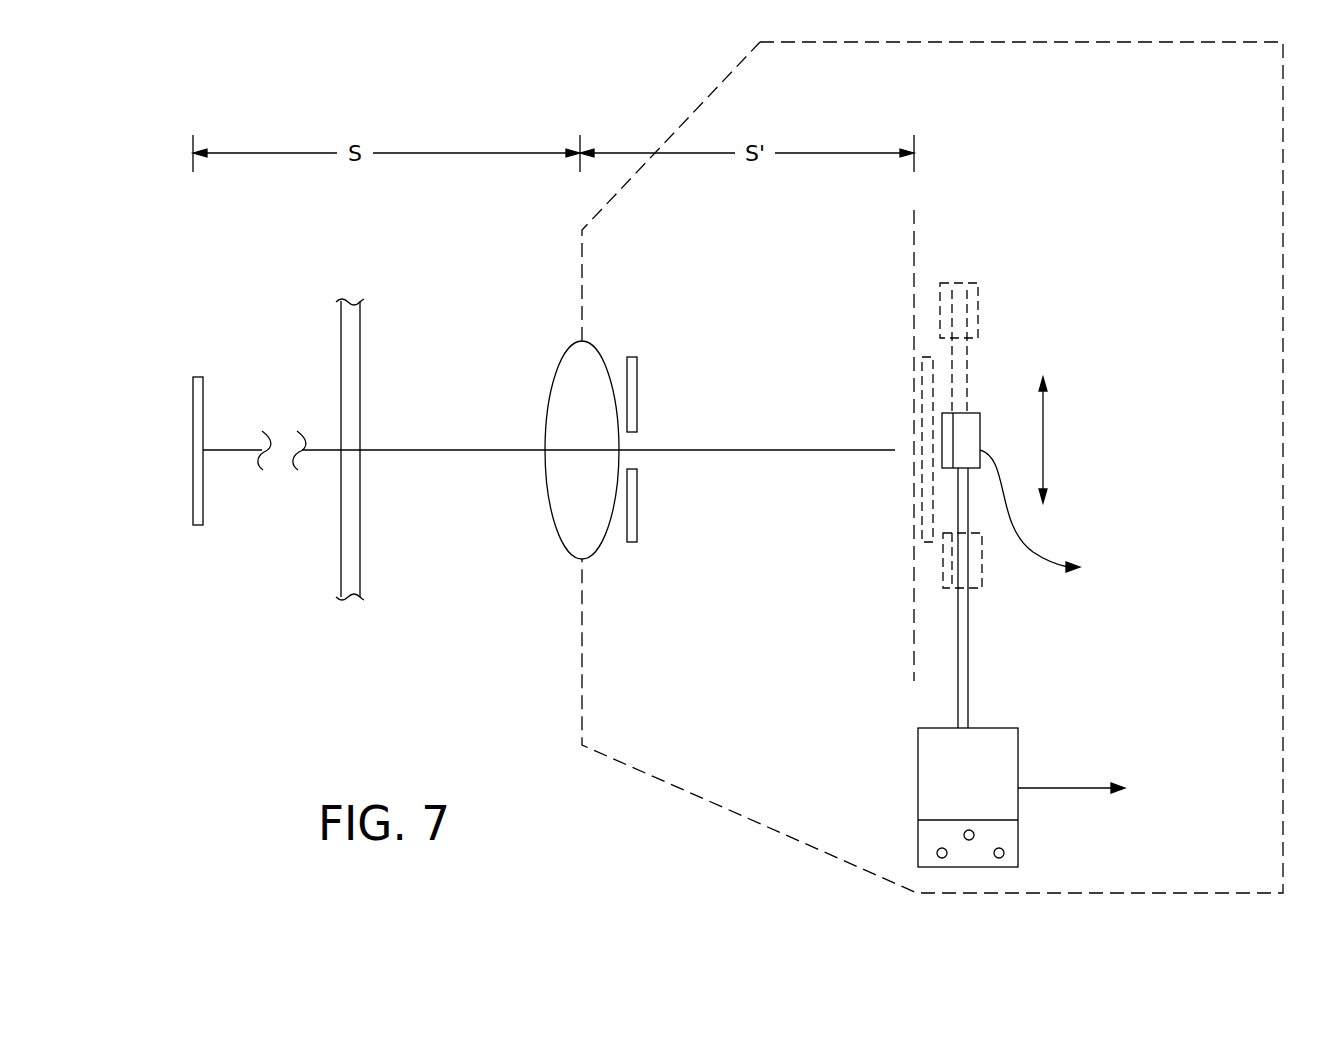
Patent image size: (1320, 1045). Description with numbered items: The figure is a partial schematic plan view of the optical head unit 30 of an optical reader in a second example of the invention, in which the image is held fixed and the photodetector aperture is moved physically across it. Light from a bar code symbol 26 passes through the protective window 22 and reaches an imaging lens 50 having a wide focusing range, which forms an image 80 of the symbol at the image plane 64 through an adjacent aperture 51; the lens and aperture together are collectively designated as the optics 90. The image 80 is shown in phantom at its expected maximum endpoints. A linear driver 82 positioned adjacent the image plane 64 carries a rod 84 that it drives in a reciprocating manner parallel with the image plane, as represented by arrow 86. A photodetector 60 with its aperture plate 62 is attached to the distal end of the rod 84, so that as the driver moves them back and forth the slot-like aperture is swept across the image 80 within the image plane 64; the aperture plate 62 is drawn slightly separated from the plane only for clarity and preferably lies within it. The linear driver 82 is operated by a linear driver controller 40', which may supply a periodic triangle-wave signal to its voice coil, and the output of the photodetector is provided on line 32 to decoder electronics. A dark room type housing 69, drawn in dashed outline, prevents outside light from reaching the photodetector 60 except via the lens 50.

The protective window 22 is at (341, 340).
The bar code symbol 26 is at (203, 403).
The optical head unit 30 is at (444, 117).
The line 32 is at (1027, 552).
The linear driver controller 40' is at (1141, 787).
The imaging lens 50 is at (562, 351).
The aperture 51 is at (654, 410).
The photodetector 60 is at (980, 413).
The aperture plate 62 is at (942, 425).
The image plane 64 is at (917, 604).
The dark room type housing 69 is at (800, 42).
The image 80 is at (922, 408).
The linear driver 82 is at (1018, 743).
The rod 84 is at (968, 633).
The arrow 86 is at (1045, 440).
The optics 90 is at (619, 572).